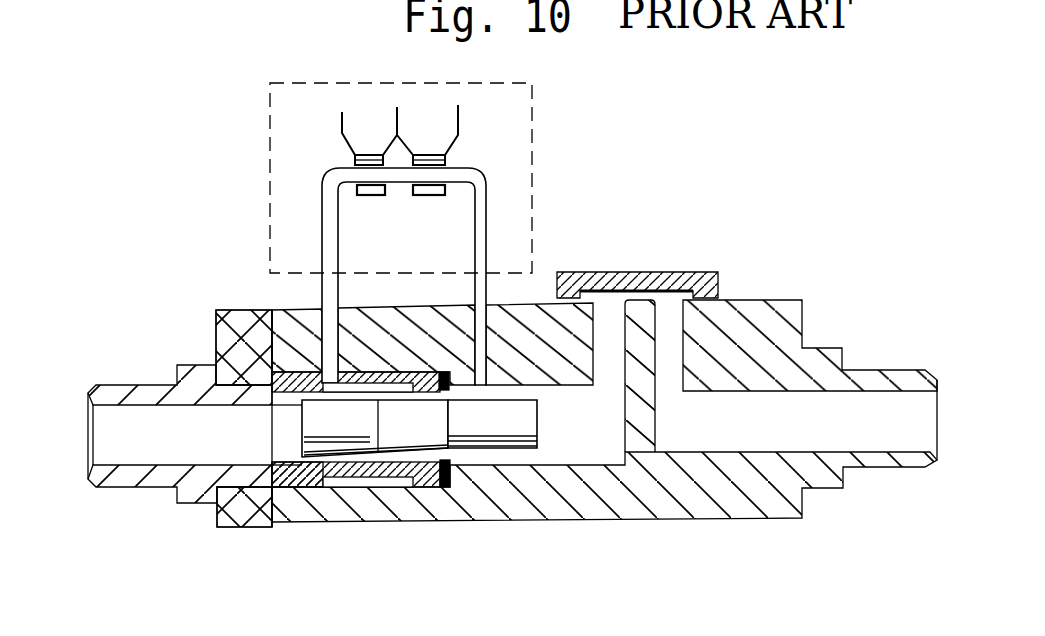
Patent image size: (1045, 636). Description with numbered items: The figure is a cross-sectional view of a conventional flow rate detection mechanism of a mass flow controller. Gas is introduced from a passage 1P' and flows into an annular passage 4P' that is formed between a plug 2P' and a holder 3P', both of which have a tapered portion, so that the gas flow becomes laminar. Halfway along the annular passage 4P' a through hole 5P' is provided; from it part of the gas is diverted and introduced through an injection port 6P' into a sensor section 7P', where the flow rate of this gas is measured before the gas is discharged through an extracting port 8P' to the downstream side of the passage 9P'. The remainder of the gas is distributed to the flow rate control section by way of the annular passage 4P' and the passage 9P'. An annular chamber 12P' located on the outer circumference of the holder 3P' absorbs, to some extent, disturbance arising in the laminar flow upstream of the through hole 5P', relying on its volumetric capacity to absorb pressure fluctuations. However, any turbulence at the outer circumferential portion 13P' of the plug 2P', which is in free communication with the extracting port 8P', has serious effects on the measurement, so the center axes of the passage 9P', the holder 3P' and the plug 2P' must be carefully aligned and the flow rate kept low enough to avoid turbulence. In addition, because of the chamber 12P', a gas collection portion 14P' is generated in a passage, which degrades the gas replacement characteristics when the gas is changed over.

The passage 1P' is at (195, 457).
The plug 2P' is at (205, 409).
The holder 3P' is at (266, 523).
The annular passage 4P' is at (356, 523).
The through hole 5P' is at (368, 307).
The injection port 6P' is at (333, 276).
The sensor section 7P' is at (469, 178).
The extracting port 8P' is at (604, 357).
The passage 9P' is at (619, 441).
The annular chamber 12P' is at (368, 531).
The outer circumferential portion 13P' is at (430, 489).
The gas collection portion 14P' is at (366, 307).